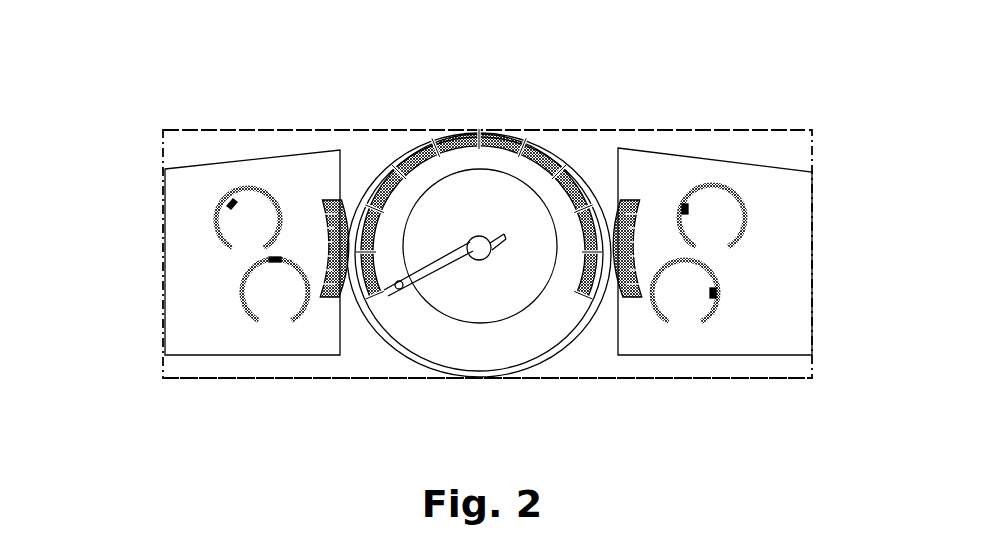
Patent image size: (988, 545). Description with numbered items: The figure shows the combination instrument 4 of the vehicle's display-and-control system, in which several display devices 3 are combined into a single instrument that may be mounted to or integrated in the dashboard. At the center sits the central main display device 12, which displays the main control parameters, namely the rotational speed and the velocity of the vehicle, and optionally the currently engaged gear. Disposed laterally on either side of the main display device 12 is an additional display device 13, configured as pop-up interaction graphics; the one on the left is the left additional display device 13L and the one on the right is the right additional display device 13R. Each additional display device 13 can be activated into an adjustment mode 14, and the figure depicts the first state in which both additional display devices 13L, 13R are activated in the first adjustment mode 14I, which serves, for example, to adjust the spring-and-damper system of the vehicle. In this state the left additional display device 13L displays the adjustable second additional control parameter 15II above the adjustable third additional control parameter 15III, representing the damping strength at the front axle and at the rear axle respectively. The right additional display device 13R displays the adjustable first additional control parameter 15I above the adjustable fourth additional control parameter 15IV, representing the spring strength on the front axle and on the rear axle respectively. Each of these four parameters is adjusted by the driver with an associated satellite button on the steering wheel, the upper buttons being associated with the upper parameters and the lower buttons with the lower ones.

The display device 3 is at (618, 128).
The combination instrument 4 is at (358, 130).
The central main display device 12 is at (428, 130).
The additional display device 13 is at (471, 225).
The left additional display device 13L is at (198, 226).
The right additional display device 13R is at (753, 218).
The adjustment mode 14 is at (487, 418).
The first adjustment mode 14I is at (335, 379).
The first additional control parameter 15I is at (754, 199).
The second additional control parameter 15II is at (196, 189).
The third additional control parameter 15III is at (196, 326).
The fourth additional control parameter 15IV is at (733, 322).